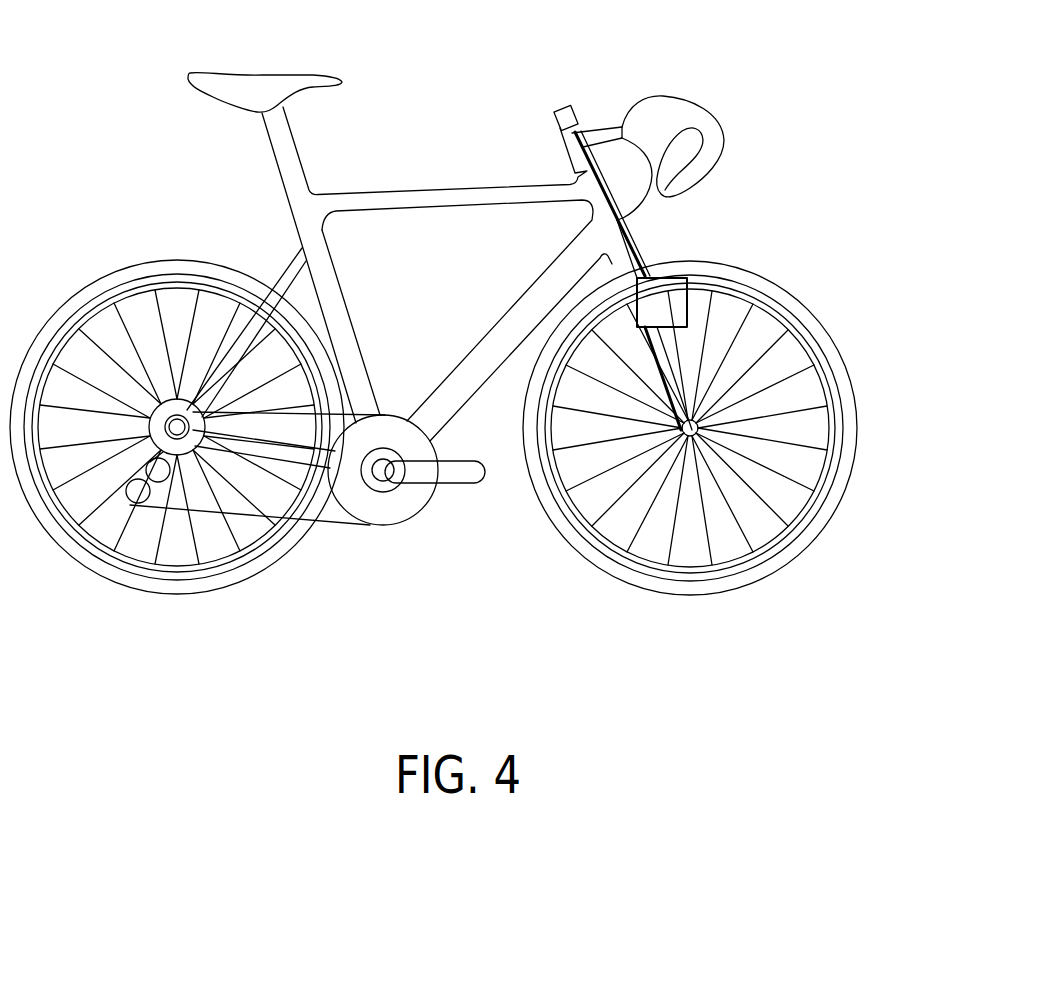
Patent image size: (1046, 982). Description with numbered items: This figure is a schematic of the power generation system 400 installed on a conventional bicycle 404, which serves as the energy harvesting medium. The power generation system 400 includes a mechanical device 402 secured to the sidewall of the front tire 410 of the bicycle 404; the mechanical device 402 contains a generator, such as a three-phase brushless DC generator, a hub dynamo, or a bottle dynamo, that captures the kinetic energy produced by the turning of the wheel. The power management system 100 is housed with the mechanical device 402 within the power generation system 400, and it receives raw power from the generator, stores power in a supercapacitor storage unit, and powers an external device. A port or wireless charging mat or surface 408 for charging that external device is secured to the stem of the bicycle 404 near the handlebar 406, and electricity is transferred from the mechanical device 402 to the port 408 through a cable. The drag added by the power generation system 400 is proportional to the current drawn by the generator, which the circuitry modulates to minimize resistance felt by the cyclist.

The power management system 100 is at (660, 290).
The power generation system 400 is at (583, 115).
The mechanical device 402 is at (668, 307).
The bicycle 404 is at (155, 173).
The handlebar 406 is at (680, 130).
The port 408 is at (561, 108).
The front tire 410 is at (831, 351).